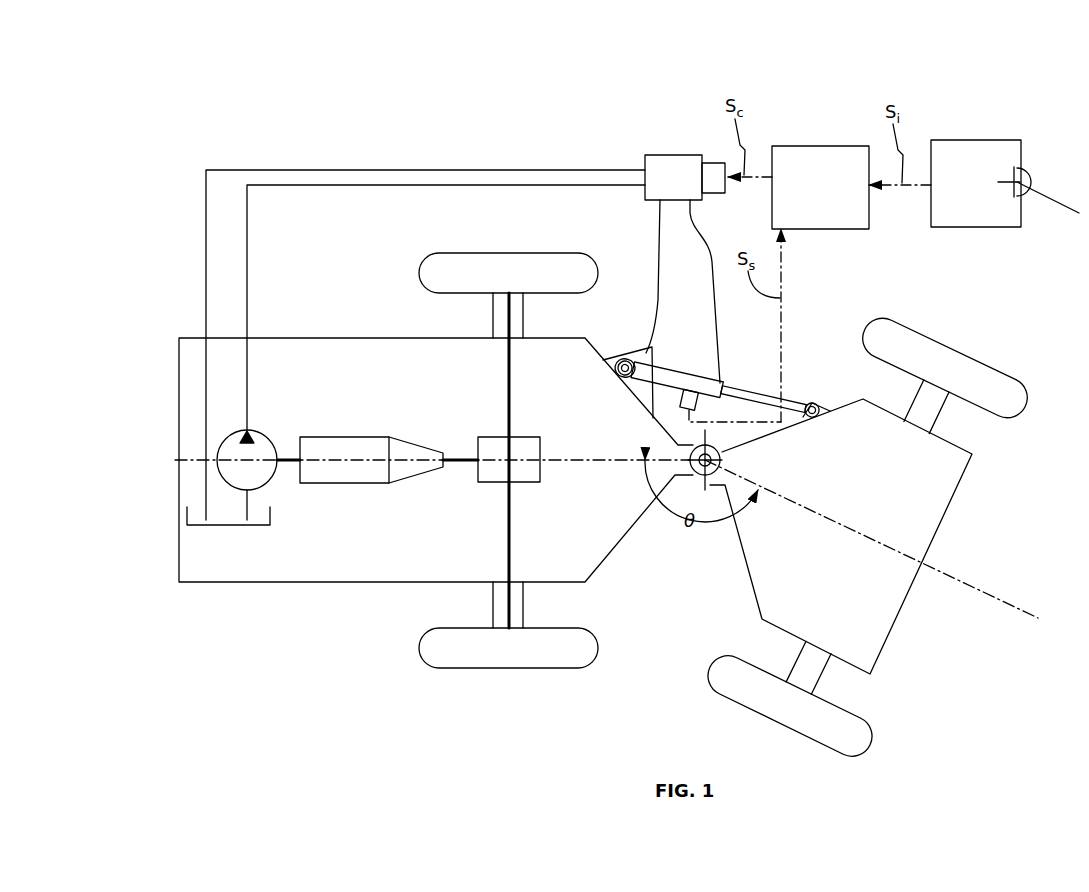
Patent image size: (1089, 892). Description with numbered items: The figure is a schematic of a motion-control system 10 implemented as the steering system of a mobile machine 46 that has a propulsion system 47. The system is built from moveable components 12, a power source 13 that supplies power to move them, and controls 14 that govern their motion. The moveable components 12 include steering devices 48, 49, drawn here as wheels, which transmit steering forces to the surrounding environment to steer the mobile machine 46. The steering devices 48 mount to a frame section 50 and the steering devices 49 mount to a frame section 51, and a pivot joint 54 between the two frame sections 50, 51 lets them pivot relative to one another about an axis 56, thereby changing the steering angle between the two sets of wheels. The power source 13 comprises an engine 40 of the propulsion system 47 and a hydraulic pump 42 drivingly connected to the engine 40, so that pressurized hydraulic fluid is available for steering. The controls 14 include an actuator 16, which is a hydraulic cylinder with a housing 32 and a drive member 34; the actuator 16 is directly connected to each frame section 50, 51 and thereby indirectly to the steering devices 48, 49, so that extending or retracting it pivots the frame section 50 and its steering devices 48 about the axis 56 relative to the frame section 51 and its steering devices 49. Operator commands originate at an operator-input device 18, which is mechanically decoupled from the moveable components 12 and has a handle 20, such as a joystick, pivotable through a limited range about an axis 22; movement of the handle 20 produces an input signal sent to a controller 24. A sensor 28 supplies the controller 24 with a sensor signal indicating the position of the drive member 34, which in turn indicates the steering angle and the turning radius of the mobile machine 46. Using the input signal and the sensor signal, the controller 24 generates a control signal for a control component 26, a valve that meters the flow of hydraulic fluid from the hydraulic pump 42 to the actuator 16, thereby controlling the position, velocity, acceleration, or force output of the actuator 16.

The motion-control system 10 is at (814, 112).
The moveable components 12 is at (740, 581).
The power source 13 is at (307, 425).
The controls 14 is at (812, 245).
The actuator 16 is at (675, 375).
The operator-input device 18 is at (988, 190).
The handle 20 is at (1060, 201).
The axis 22 is at (1015, 180).
The controller 24 is at (831, 196).
The control component 26 is at (685, 177).
The sensor 28 is at (680, 398).
The housing 32 is at (650, 350).
The drive member 34 is at (748, 397).
The engine 40 is at (343, 472).
The hydraulic pump 42 is at (269, 483).
The mobile machine 46 is at (292, 657).
The propulsion system 47 is at (480, 313).
The steering devices 48 is at (975, 373).
The steering devices 49 is at (528, 262).
The frame section 50 is at (872, 510).
The frame section 51 is at (551, 415).
The pivot joint 54 is at (680, 478).
The axis 56 is at (716, 446).